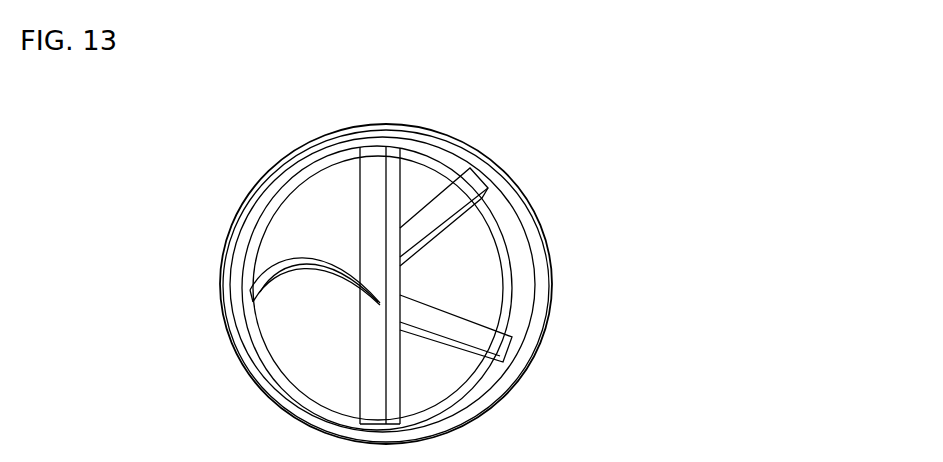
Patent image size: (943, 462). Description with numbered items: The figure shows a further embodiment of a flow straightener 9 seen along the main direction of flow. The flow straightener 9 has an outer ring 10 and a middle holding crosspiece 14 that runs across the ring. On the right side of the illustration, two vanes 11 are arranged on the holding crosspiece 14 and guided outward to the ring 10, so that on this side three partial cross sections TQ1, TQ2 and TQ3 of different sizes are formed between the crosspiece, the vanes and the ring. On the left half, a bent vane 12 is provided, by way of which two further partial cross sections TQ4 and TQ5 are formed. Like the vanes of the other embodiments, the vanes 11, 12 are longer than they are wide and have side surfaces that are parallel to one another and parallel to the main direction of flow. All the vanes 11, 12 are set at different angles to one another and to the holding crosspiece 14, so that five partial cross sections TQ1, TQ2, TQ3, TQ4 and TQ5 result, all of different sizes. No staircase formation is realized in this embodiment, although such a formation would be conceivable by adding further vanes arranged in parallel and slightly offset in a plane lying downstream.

The flow straightener 9 is at (591, 154).
The outer ring 10 is at (407, 124).
The vanes 11 is at (477, 176).
The bent vane 12 is at (272, 266).
The holding crosspiece 14 is at (375, 163).
The partial cross section TQ1 is at (428, 172).
The partial cross section TQ2 is at (487, 273).
The partial cross section TQ3 is at (447, 373).
The partial cross section TQ4 is at (310, 182).
The partial cross section TQ5 is at (303, 367).